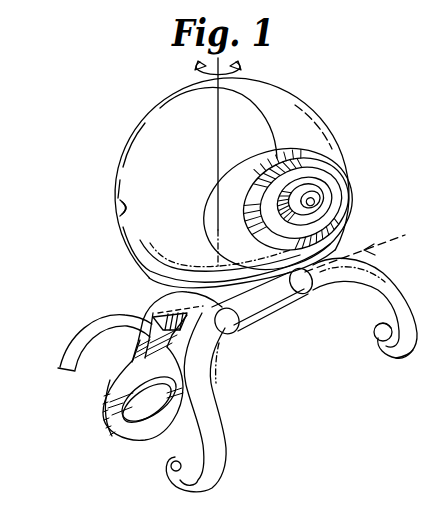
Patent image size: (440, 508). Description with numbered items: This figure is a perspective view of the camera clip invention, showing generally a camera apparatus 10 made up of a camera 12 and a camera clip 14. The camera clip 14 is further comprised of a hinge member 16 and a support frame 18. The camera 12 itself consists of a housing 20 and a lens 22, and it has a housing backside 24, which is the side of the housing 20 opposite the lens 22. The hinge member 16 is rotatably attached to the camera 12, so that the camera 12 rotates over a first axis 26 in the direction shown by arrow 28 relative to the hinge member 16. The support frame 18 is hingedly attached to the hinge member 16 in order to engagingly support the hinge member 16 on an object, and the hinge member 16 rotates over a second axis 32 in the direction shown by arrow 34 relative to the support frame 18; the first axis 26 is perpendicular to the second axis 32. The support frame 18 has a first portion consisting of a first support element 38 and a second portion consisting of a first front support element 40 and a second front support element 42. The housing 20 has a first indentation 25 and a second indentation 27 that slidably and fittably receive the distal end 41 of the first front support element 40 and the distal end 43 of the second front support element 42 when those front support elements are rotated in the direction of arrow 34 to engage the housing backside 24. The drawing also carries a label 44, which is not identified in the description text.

The camera apparatus 10 is at (240, 158).
The camera 12 is at (322, 118).
The camera clip 14 is at (218, 370).
The hinge member 16 is at (268, 325).
The support frame 18 is at (102, 392).
The housing 20 is at (312, 134).
The lens 22 is at (322, 208).
The housing backside 24 is at (120, 196).
The first indentation 25 is at (119, 210).
The first axis 26 is at (212, 90).
The second indentation 27 is at (297, 100).
The arrow 28 is at (240, 66).
The second axis 32 is at (370, 252).
The arrow 34 is at (327, 360).
The first support element 38 is at (94, 426).
The first front support element 40 is at (197, 405).
The distal end 41 is at (165, 460).
The second front support element 42 is at (407, 370).
The distal end 43 is at (375, 332).
The strap arm 44 is at (117, 287).